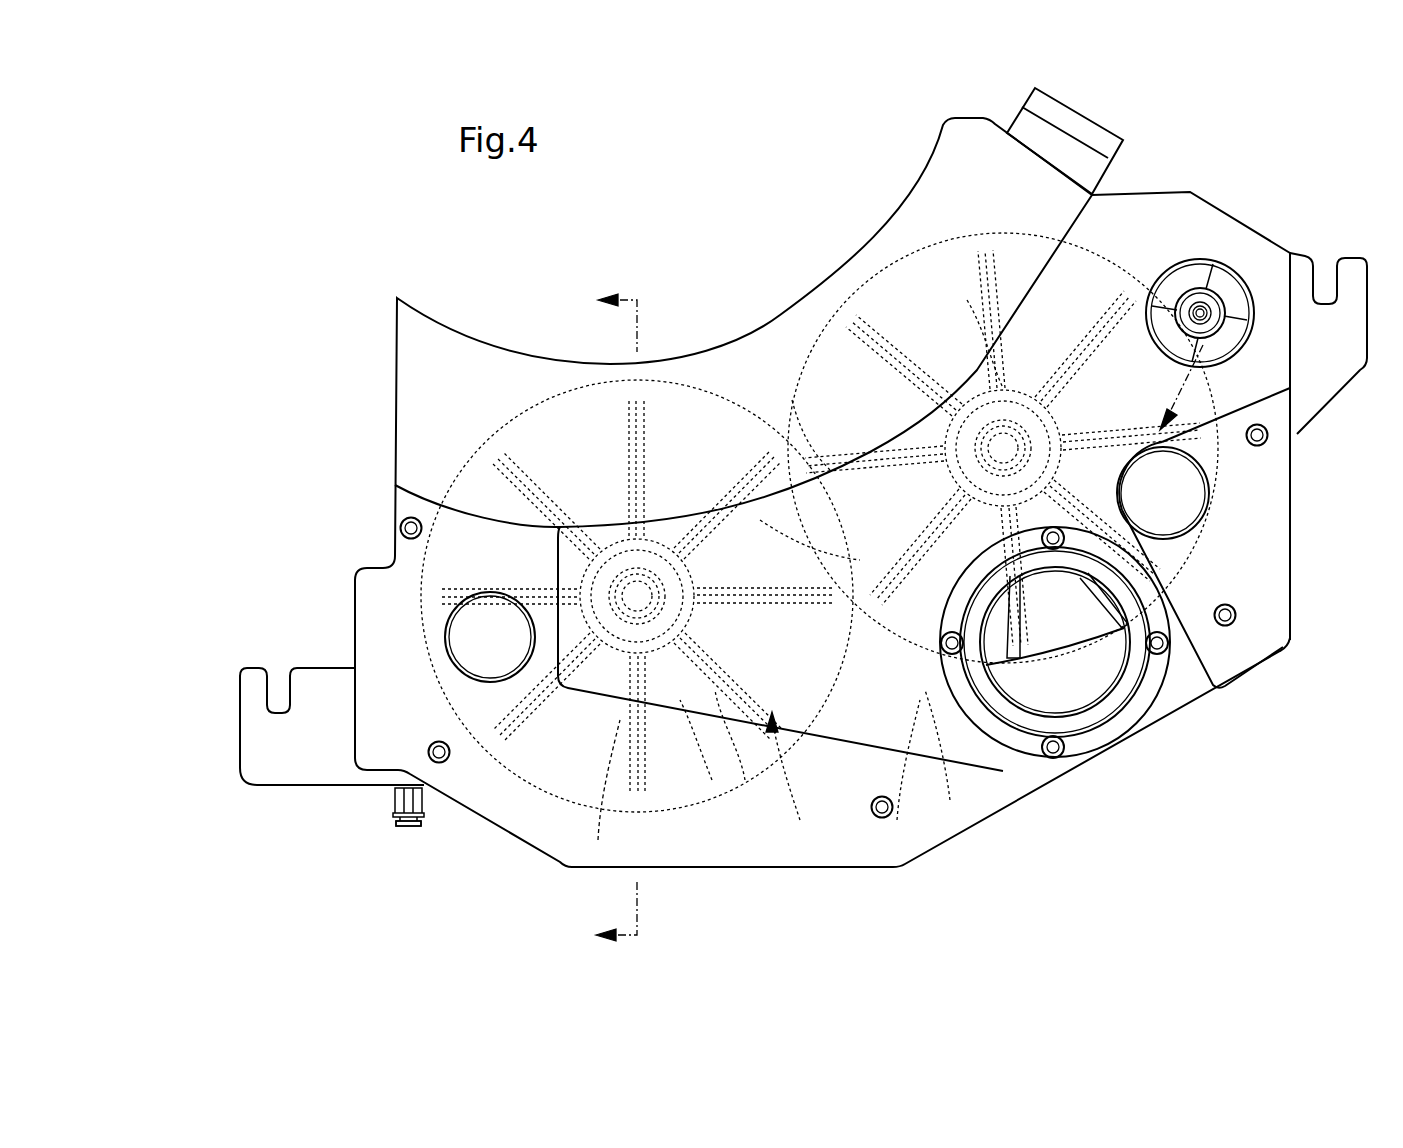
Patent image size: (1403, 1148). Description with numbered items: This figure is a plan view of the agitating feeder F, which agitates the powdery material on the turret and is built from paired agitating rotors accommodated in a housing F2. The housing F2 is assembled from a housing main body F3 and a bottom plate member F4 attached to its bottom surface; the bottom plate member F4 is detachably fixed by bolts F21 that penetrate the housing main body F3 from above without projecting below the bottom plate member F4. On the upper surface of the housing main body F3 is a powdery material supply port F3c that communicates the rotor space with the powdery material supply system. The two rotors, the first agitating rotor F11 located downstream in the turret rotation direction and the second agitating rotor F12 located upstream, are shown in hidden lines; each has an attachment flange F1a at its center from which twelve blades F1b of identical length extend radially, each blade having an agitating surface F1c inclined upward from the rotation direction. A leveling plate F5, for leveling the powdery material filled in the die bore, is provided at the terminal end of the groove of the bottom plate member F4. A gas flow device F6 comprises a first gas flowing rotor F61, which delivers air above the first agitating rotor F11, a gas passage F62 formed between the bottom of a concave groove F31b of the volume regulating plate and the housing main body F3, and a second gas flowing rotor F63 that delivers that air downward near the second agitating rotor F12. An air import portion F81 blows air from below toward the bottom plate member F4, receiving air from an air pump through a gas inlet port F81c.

The agitating feeder F is at (328, 341).
The attachment flange F1a is at (1135, 230).
The blades F1b is at (745, 780).
The agitating surface F1c is at (712, 780).
The first agitating rotor F11 is at (1298, 290).
The second agitating rotor F12 is at (800, 820).
The housing F2 is at (222, 598).
The bolts F21 is at (1268, 443).
The housing main body F3 is at (360, 635).
The powdery material supply port F3c is at (1063, 712).
The concave groove F31b is at (792, 400).
The bottom plate member F4 is at (277, 765).
The leveling plate F5 is at (1012, 118).
The gas flow device F6 is at (931, 472).
The first gas flowing rotor F61 is at (967, 300).
The gas passage F62 is at (800, 408).
The second gas flowing rotor F63 is at (615, 580).
The air import portion F81 is at (380, 812).
The gas inlet port F81c is at (408, 830).